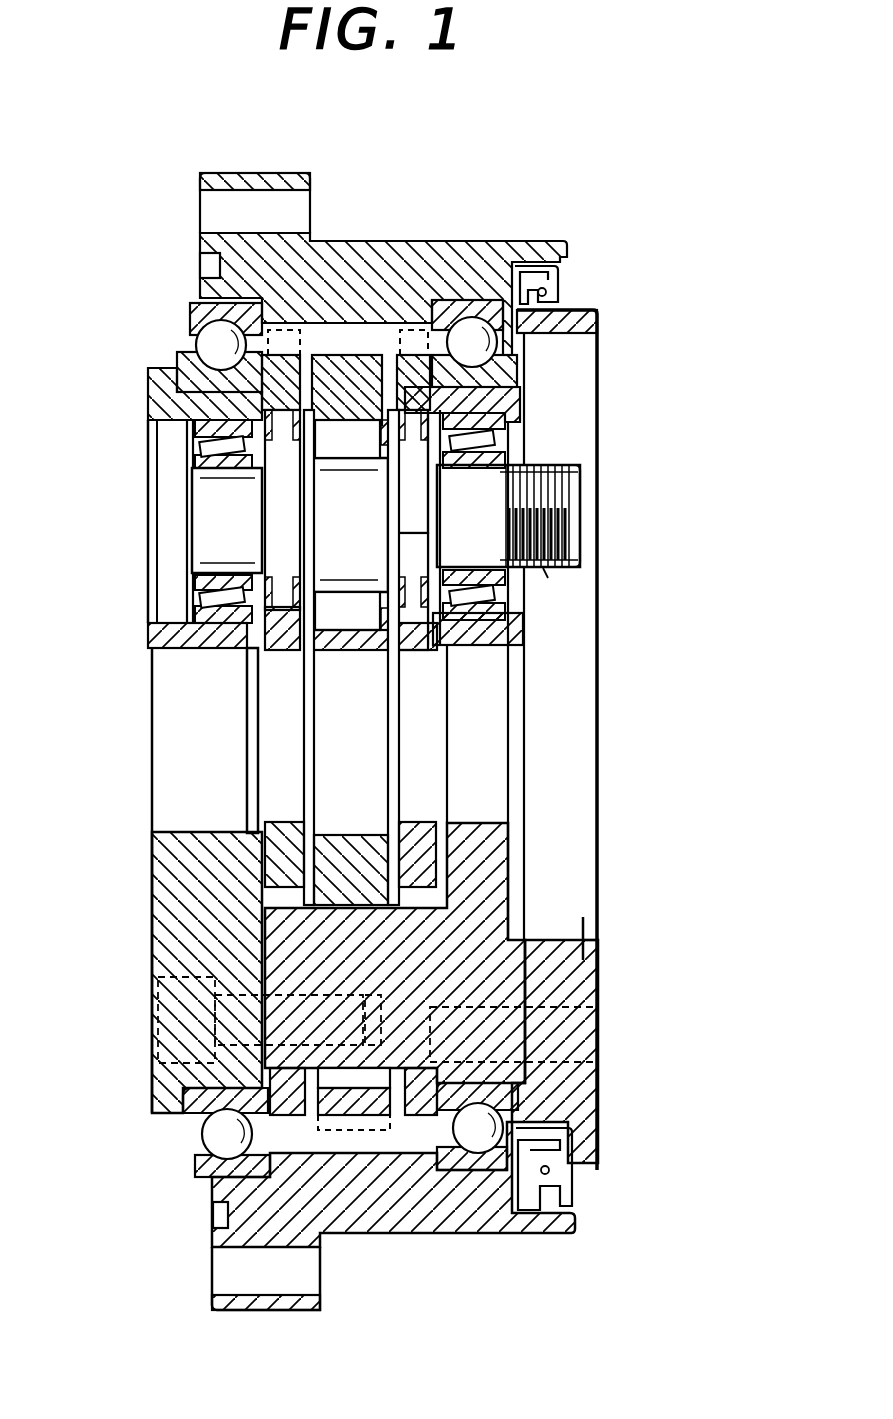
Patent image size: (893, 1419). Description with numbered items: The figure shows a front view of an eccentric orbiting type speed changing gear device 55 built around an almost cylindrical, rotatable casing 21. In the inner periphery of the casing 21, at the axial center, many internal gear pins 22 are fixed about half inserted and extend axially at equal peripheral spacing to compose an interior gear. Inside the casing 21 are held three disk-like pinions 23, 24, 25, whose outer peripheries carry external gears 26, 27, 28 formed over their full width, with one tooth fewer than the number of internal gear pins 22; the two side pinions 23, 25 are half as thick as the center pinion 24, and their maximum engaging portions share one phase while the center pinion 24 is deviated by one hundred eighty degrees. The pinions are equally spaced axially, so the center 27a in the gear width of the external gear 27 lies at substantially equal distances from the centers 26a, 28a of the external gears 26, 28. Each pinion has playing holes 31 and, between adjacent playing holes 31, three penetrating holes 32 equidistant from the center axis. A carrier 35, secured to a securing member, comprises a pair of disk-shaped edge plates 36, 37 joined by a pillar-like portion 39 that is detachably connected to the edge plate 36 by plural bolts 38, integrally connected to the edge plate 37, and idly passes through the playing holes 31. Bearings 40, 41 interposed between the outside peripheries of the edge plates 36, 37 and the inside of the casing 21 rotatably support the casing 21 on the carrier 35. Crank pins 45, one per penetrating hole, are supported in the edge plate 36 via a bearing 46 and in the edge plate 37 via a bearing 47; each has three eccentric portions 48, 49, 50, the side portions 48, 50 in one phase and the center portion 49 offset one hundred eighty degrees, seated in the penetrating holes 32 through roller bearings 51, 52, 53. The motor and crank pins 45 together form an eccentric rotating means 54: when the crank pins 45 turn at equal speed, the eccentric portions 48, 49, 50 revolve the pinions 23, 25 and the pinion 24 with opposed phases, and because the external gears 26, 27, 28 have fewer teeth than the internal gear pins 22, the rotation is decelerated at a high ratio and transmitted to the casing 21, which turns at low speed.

The casing 21 is at (335, 255).
The internal gear pins 22 is at (370, 335).
The pinion 23 is at (252, 845).
The pinion 24 is at (330, 832).
The pinion 25 is at (405, 835).
The external gear 26 is at (280, 305).
The center in gear width of external gear 26a is at (282, 330).
The external gear 27 is at (356, 1122).
The center in gear width of external gear 27a is at (331, 1130).
The external gear 28 is at (420, 350).
The center in gear width of external gear 28a is at (432, 330).
The playing hole 31 is at (285, 892).
The penetrating holes 32 is at (400, 660).
The carrier 35 is at (604, 1028).
The edge plate 36 is at (200, 936).
The edge plate 37 is at (600, 975).
The bolts 38 is at (160, 1010).
The pillar-like portion 39 is at (390, 932).
The bearing 40 is at (178, 352).
The bearing 41 is at (530, 370).
The crank pin 45 is at (565, 500).
The bearing 46 is at (205, 446).
The bearing 47 is at (505, 648).
The eccentric portion 48 is at (240, 478).
The eccentric portion 49 is at (350, 445).
The eccentric portion 50 is at (560, 478).
The roller bearing 51 is at (290, 585).
The roller bearing 52 is at (283, 490).
The roller bearing 53 is at (560, 538).
The eccentric rotating means 54 is at (545, 572).
The eccentric orbiting type speed changing gear device 55 is at (583, 270).